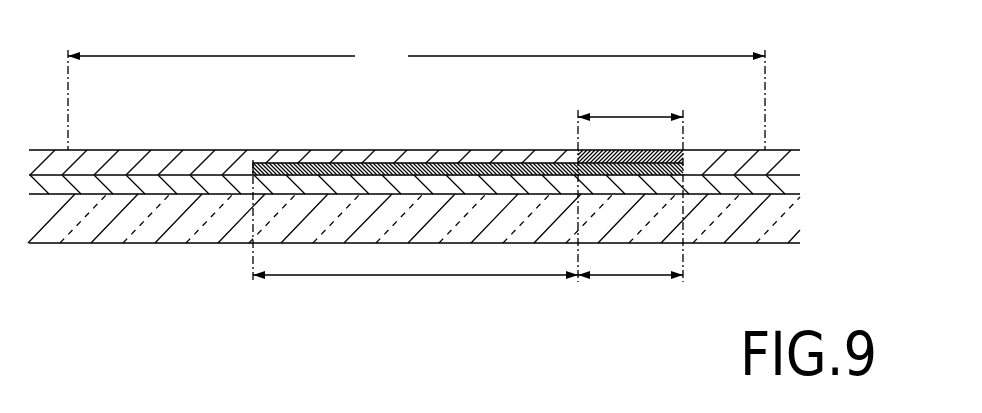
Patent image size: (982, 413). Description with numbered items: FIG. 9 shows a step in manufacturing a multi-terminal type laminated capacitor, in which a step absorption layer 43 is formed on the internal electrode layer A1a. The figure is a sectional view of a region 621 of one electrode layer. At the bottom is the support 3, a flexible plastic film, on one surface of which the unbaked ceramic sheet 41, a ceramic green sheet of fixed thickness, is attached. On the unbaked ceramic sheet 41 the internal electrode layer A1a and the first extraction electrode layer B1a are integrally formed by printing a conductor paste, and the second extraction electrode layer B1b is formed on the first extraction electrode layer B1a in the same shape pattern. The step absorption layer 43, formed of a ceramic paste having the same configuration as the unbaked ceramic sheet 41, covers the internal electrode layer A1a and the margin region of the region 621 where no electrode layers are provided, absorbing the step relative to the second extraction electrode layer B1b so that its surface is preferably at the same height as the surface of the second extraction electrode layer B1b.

The step absorption layer 43 is at (125, 158).
The unbaked ceramic sheet 41 is at (800, 176).
The support 3 is at (800, 218).
The region 621 is at (416, 95).
The internal electrode layer A1a is at (434, 277).
The first extraction electrode layer B1a is at (629, 277).
The second extraction electrode layer B1b is at (631, 107).